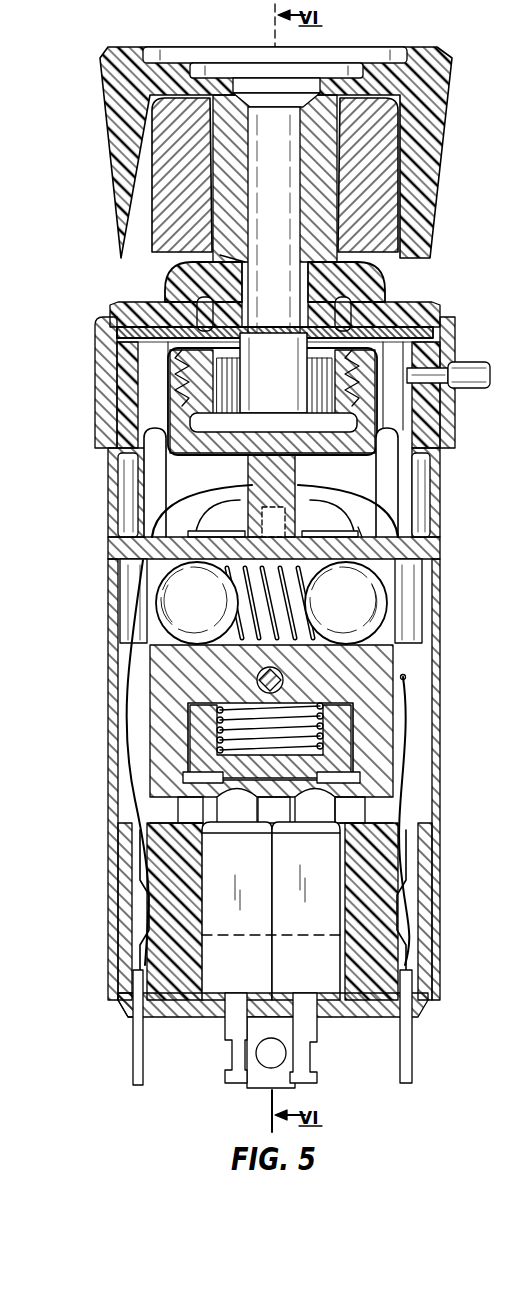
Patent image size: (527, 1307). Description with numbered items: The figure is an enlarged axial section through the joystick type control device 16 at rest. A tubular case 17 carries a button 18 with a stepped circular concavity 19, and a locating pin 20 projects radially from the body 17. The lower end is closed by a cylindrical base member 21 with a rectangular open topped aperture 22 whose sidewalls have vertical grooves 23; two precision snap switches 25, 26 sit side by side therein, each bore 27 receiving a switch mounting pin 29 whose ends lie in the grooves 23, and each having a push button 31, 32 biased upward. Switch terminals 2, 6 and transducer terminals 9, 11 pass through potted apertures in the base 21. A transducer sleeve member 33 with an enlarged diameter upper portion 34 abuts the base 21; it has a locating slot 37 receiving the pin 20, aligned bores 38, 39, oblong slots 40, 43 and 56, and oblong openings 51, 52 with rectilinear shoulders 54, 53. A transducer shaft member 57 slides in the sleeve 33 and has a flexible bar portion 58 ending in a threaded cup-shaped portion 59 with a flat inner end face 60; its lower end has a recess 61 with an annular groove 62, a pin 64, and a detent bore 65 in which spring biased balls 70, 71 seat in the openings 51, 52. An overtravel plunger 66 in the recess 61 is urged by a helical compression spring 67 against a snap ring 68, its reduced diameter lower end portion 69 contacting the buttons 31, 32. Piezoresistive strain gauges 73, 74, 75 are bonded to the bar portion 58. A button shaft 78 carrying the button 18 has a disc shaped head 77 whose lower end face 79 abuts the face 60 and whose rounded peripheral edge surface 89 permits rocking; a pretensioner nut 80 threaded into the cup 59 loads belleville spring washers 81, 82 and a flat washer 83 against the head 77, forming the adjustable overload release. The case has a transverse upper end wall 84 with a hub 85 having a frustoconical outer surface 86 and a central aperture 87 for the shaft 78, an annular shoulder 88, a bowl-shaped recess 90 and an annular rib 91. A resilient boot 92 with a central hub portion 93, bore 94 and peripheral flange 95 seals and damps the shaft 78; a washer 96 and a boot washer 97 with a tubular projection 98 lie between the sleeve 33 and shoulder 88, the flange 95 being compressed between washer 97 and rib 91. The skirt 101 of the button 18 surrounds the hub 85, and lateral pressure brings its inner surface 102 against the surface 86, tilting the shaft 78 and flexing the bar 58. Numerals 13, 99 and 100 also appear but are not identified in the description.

The switch terminal 2 is at (223, 1075).
The switch terminal 6 is at (317, 1077).
The transducer terminal 9 is at (133, 1068).
The transducer terminal 11 is at (412, 1077).
The center terminal block 13 is at (263, 1083).
The joystick type control device 16 is at (101, 268).
The case 17 is at (457, 327).
The button 18 is at (447, 108).
The circular concavity 19 is at (347, 50).
The locating pin 20 is at (490, 374).
The base member 21 is at (128, 1000).
The aperture 22 is at (340, 1017).
The vertical grooves 23 is at (173, 923).
The precision snap switch 25 is at (232, 867).
The precision snap switch 26 is at (325, 862).
The bore 27 is at (247, 933).
The switch mounting pin 29 is at (198, 960).
The push button 31 is at (220, 808).
The push button 32 is at (350, 810).
The transducer sleeve member 33 is at (415, 552).
The enlarged diameter upper portion 34 is at (425, 428).
The locating slot 37 is at (430, 393).
The bore 38 is at (130, 478).
The bore 39 is at (420, 490).
The oblong slot 40 is at (393, 447).
The oblong slot 43 is at (143, 432).
The opening 51 is at (153, 580).
The opening 52 is at (393, 580).
The rectilinear shoulder 53 is at (377, 633).
The rectilinear shoulder 54 is at (200, 640).
The oblong slot 56 is at (283, 665).
The transducer shaft member 57 is at (360, 675).
The flexible bar portion 58 is at (253, 477).
The cup-shaped portion 59 is at (178, 388).
The inner end face 60 is at (175, 482).
The recess 61 is at (330, 740).
The annular groove 62 is at (360, 775).
The pin 64 is at (257, 673).
The detent bore 65 is at (359, 523).
The overtravel plunger 66 is at (205, 745).
The helical compression spring 67 is at (403, 690).
The snap ring 68 is at (200, 778).
The reduced diameter lower end portion 69 is at (276, 806).
The detent ball 70 is at (208, 614).
The detent ball 71 is at (358, 614).
The strain gauge 73 is at (252, 517).
The strain gauge 74 is at (277, 487).
The strain gauge 75 is at (295, 517).
The disc shaped head 77 is at (257, 420).
The button shaft 78 is at (286, 241).
The lower end face 79 is at (290, 420).
The pretensioner nut 80 is at (357, 353).
The belleville spring washer 81 is at (203, 385).
The belleville spring washer 82 is at (190, 403).
The flat washer 83 is at (350, 398).
The transverse upper end wall 84 is at (395, 292).
The hub 85 is at (402, 213).
The frustoconical outer surface 86 is at (157, 188).
The central aperture 87 is at (223, 257).
The annular shoulder 88 is at (123, 320).
The rounded peripheral edge surface 89 is at (337, 434).
The bowl-shaped recess 90 is at (400, 268).
The annular rib 91 is at (393, 308).
The boot 92 is at (180, 282).
The central hub portion 93 is at (237, 340).
The bore 94 is at (300, 293).
The peripheral flange 95 is at (137, 310).
The washer 96 is at (148, 347).
The boot washer 97 is at (113, 330).
The tubular projection 98 is at (343, 317).
The plug 99 is at (398, 177).
The plug 100 is at (315, 160).
The skirt 101 is at (112, 127).
The inner surface 102 is at (152, 155).